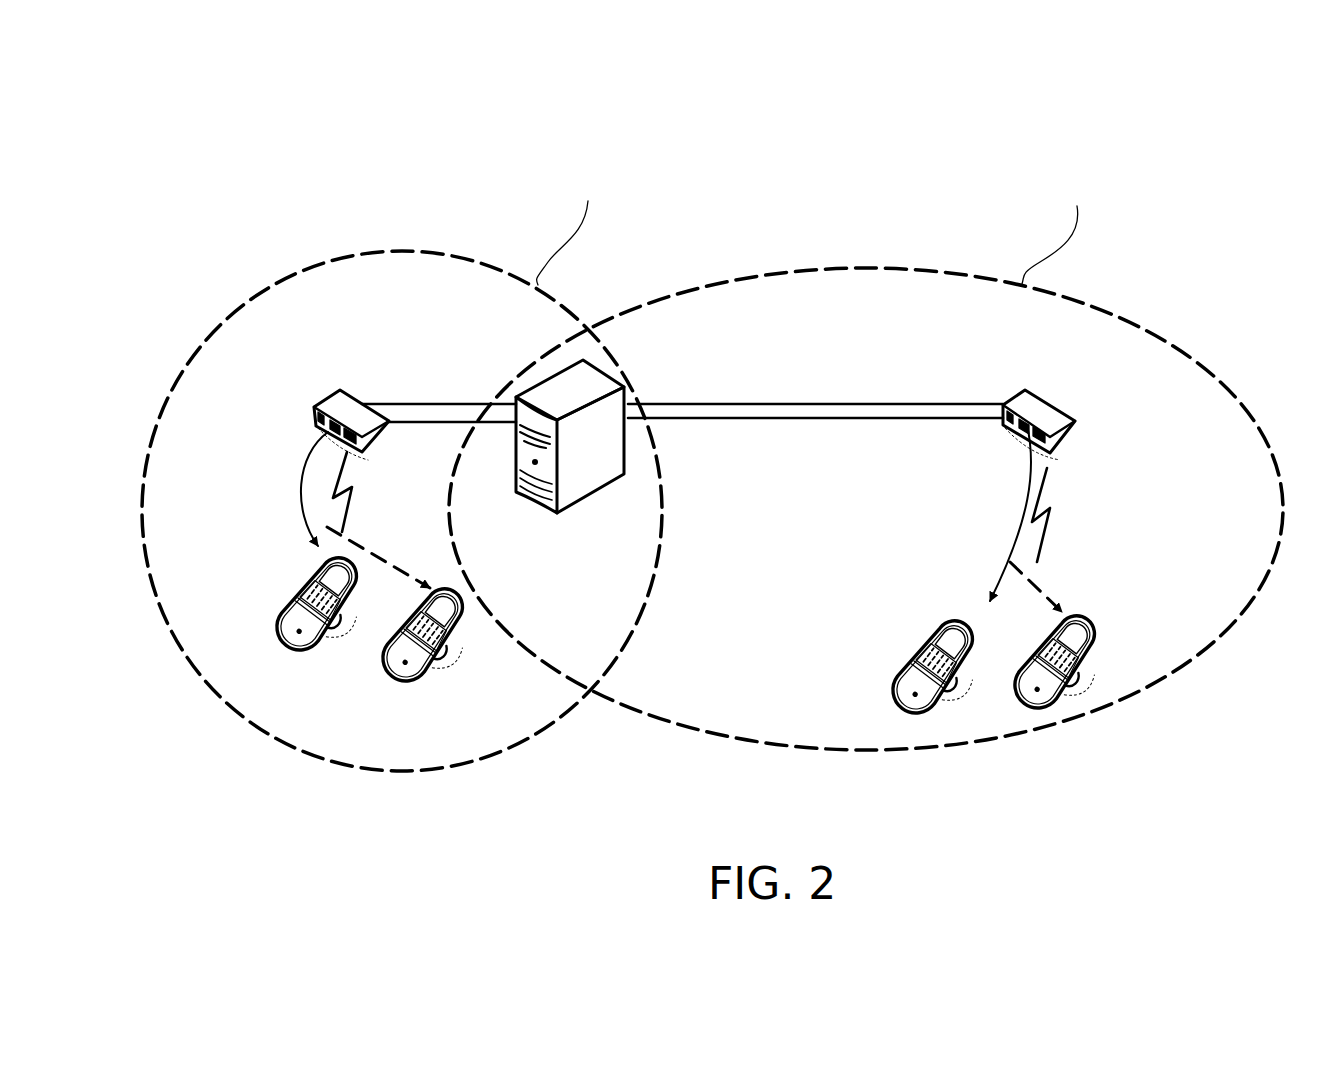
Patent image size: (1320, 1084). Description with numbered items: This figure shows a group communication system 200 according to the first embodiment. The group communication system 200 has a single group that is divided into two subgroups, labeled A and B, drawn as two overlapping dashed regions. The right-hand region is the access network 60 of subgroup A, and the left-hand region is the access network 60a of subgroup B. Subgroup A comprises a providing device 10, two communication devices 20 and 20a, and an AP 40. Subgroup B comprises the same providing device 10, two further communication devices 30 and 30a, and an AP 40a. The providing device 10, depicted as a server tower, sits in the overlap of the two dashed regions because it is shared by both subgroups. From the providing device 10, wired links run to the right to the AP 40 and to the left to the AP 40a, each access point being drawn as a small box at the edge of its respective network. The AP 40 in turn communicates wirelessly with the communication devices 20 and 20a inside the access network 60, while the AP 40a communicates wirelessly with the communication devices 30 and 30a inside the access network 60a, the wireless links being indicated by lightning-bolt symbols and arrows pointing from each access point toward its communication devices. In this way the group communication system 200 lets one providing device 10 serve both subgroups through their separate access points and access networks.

The group communication system 200 is at (1047, 139).
The providing device 10 is at (590, 362).
The communication device 20 is at (935, 714).
The communication device 20a is at (1053, 712).
The communication device 30 is at (278, 633).
The communication device 30a is at (423, 682).
The AP 40 is at (1040, 395).
The AP 40a is at (340, 395).
The access network 60 is at (770, 404).
The access network 60a is at (417, 403).